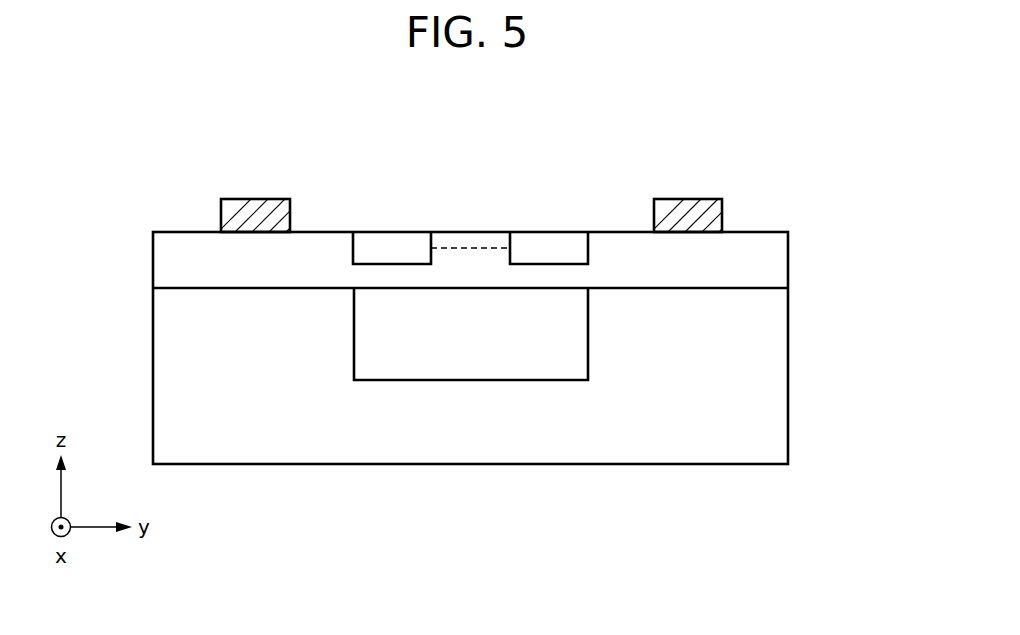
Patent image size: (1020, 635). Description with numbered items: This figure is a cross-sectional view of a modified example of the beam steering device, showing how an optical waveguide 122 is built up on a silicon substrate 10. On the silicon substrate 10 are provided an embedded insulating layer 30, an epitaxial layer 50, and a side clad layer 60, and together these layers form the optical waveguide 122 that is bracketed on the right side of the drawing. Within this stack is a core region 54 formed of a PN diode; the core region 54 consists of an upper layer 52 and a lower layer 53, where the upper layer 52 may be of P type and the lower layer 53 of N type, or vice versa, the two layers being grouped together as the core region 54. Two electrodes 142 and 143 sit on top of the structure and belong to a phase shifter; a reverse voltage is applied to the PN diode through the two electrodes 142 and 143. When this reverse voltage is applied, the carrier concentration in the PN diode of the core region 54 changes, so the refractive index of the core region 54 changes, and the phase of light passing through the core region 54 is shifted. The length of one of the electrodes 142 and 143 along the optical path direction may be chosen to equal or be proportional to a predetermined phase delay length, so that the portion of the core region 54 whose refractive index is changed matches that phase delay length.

The silicon substrate 10 is at (780, 397).
The embedded insulating layer 30 is at (572, 358).
The epitaxial layer 50 is at (780, 273).
The upper layer 52 is at (493, 240).
The lower layer 53 is at (470, 258).
The core region 54 is at (850, 288).
The side clad layer 60 is at (578, 247).
The optical waveguide 122 is at (890, 237).
The electrode 142 is at (259, 208).
The electrode 143 is at (691, 208).